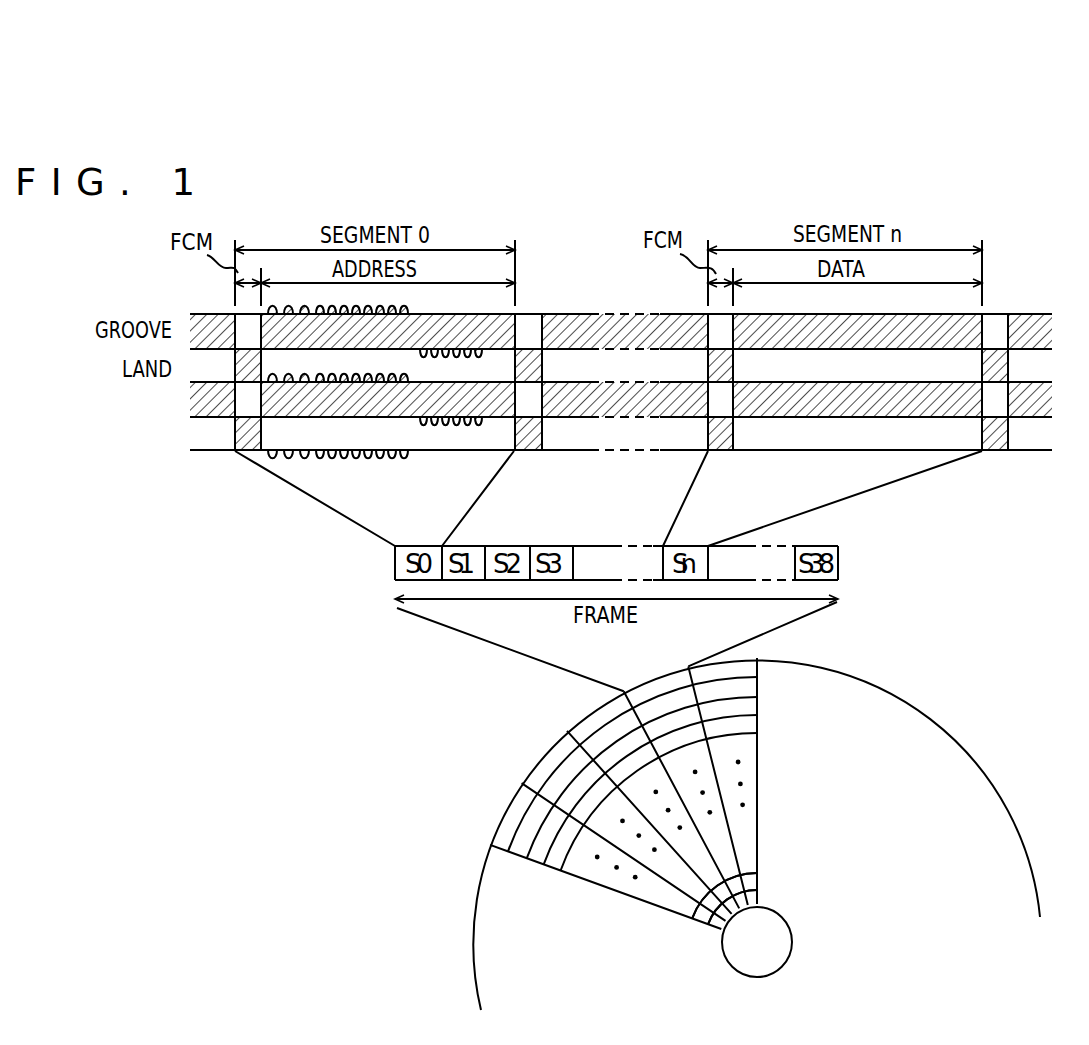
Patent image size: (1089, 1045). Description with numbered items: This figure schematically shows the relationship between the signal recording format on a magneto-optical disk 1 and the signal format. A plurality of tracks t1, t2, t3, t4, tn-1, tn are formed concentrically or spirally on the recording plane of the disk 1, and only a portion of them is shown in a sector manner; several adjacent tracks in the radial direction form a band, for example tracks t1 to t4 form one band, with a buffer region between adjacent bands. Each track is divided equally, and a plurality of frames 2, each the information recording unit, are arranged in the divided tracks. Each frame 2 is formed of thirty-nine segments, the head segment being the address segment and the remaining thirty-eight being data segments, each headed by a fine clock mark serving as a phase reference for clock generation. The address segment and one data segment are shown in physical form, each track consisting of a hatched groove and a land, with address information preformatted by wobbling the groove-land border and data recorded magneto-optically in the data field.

The magneto-optical disk 1 is at (972, 755).
The frame 2 is at (509, 806).
The track t1 is at (758, 677).
The track t2 is at (758, 697).
The track t3 is at (758, 715).
The track t4 is at (758, 733).
The track tn-1 is at (758, 873).
The track tn is at (758, 890).